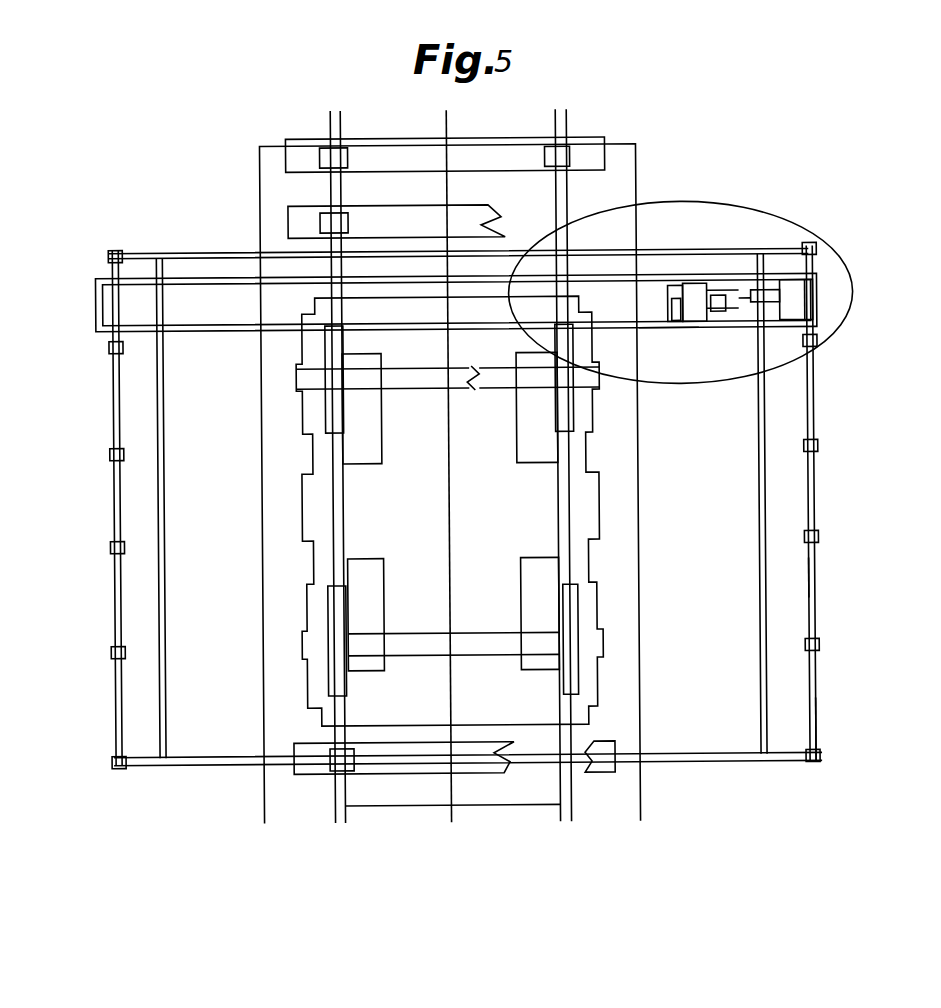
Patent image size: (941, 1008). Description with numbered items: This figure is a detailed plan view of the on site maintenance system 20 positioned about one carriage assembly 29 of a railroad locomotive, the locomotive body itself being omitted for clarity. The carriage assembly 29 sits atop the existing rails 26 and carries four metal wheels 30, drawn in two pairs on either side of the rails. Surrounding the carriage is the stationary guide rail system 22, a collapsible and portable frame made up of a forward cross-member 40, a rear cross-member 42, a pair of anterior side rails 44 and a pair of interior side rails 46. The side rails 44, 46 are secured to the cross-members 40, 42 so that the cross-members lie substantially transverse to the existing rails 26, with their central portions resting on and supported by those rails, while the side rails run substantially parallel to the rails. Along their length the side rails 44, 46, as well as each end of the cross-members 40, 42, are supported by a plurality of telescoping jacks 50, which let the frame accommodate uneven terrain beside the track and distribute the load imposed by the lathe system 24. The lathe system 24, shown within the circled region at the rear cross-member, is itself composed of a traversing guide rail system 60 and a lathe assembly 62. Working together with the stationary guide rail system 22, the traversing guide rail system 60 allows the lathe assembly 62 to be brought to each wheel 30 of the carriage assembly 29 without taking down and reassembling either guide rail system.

The on site maintenance system 20 is at (880, 718).
The stationary guide rail system 22 is at (815, 575).
The lathe system 24 is at (712, 199).
The existing rails 26 is at (340, 807).
The carriage assembly 29 is at (600, 518).
The metal wheels 30 is at (376, 430).
The forward cross-member 40 is at (717, 757).
The rear cross-member 42 is at (202, 256).
The anterior side rails 44 is at (110, 403).
The interior side rails 46 is at (164, 432).
The telescoping jacks 50 is at (108, 253).
The traversing guide rail system 60 is at (822, 300).
The lathe assembly 62 is at (668, 334).